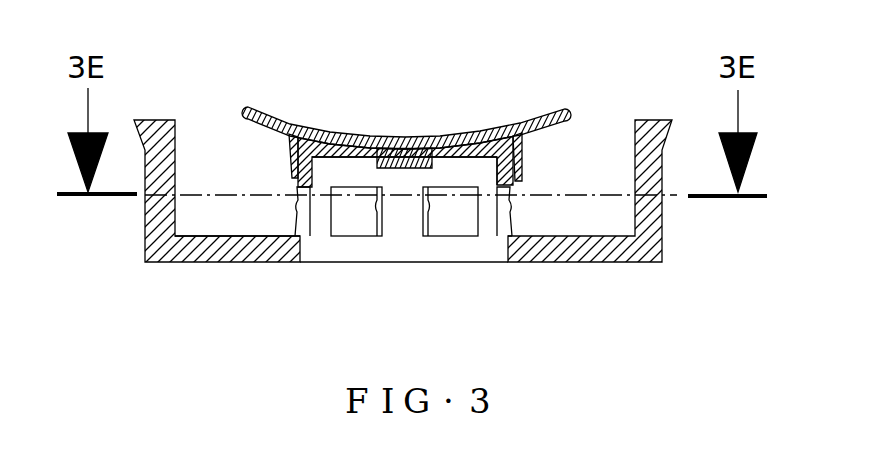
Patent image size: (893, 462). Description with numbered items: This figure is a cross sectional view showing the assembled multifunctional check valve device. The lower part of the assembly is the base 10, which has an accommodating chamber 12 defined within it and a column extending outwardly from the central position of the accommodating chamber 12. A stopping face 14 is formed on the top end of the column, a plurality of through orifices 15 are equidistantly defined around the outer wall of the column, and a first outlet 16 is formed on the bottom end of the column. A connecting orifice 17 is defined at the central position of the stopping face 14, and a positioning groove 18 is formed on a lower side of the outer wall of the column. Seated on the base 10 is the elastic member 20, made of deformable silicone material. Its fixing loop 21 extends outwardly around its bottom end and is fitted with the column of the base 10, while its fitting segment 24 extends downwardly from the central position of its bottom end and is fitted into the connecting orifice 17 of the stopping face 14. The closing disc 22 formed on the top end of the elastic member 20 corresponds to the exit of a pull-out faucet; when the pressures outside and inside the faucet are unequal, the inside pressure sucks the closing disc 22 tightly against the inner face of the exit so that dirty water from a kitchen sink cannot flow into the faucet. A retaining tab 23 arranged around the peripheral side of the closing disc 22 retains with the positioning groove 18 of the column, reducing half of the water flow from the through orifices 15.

The base 10 is at (145, 227).
The accommodating chamber 12 is at (197, 220).
The stopping face 14 is at (347, 153).
The through orifices 15 is at (348, 220).
The first outlet 16 is at (405, 245).
The connecting orifice 17 is at (439, 152).
The positioning groove 18 is at (513, 210).
The elastic member 20 is at (407, 125).
The fixing loop 21 is at (520, 165).
The closing disc 22 is at (508, 145).
The retaining tab 23 is at (247, 110).
The fitting segment 24 is at (392, 150).